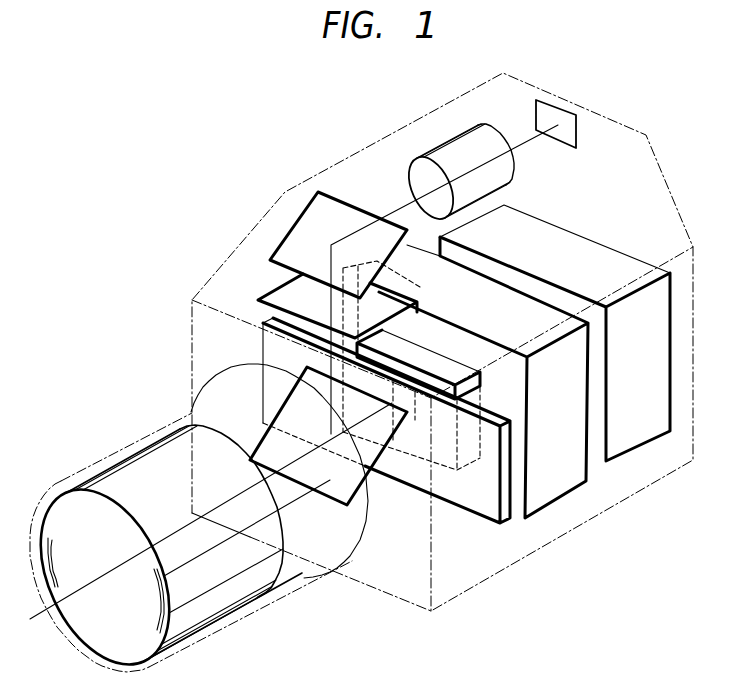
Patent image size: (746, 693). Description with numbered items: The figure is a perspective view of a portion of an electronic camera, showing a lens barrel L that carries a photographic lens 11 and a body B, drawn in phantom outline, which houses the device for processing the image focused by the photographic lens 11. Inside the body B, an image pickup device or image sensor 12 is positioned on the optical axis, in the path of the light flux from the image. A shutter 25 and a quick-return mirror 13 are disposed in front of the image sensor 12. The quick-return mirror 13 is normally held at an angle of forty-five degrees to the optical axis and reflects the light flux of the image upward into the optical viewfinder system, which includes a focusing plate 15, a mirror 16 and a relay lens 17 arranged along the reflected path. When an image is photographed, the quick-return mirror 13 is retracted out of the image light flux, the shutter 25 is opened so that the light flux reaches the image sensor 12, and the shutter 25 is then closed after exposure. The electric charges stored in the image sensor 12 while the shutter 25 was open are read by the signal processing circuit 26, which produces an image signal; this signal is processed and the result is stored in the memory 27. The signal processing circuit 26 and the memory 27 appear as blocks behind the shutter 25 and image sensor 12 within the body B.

The body B is at (534, 541).
The lens barrel L is at (293, 578).
The photographic lens 11 is at (210, 603).
The image pickup device (image sensor) 12 is at (474, 386).
The quick-return mirror 13 is at (343, 487).
The focusing plate 15 is at (280, 293).
The mirror 16 is at (320, 210).
The relay lens 17 is at (452, 150).
The shutter 25 is at (485, 510).
The signal processing circuit 26 is at (563, 479).
The memory 27 is at (636, 436).